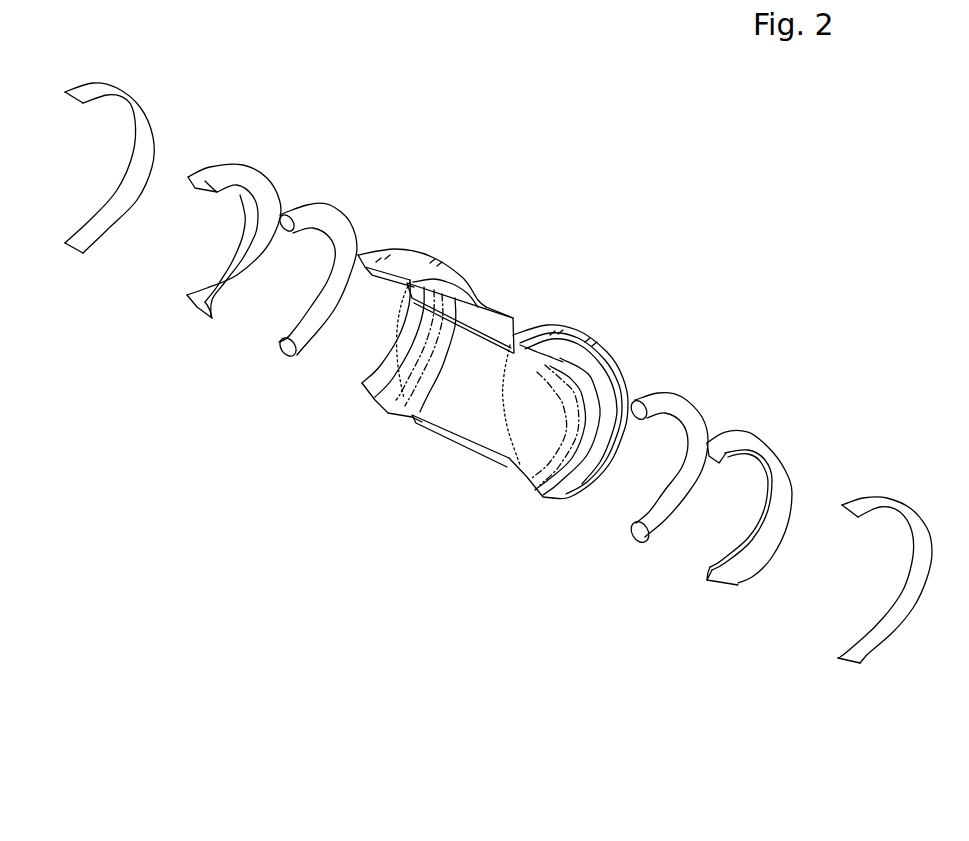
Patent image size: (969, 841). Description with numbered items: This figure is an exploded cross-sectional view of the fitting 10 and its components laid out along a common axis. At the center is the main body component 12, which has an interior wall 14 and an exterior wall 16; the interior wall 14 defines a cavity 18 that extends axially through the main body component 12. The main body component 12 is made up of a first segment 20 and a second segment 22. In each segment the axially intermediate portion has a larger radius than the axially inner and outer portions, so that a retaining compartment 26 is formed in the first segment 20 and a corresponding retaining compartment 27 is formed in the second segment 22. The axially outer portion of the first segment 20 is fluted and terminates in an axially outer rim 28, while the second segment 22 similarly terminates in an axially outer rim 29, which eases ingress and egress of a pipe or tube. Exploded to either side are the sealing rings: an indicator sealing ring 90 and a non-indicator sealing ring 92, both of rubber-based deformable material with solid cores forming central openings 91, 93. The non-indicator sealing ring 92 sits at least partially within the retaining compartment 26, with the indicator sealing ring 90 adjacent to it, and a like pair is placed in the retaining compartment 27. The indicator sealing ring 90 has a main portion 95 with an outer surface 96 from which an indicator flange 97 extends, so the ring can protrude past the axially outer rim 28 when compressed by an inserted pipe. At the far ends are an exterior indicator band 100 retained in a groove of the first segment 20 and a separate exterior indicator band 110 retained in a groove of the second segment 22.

The fitting 10 is at (739, 238).
The main body component 12 is at (490, 310).
The interior wall 14 is at (514, 318).
The exterior wall 16 is at (502, 449).
The cavity 18 is at (102, 173).
The first segment 20 is at (537, 573).
The second segment 22 is at (352, 491).
The retaining compartment 26 is at (538, 481).
The retaining compartment 27 is at (392, 408).
The axially outer rim 28 is at (574, 504).
The axially outer rim 29 is at (356, 390).
The indicator sealing ring 90 is at (251, 282).
The opening 91 is at (784, 530).
The non-indicator sealing ring 92 is at (280, 355).
The opening 93 is at (677, 480).
The main portion 95 is at (211, 320).
The outer surface 96 is at (243, 168).
The indicator flange 97 is at (187, 295).
The exterior indicator band 100 is at (858, 655).
The exterior indicator band 110 is at (140, 108).